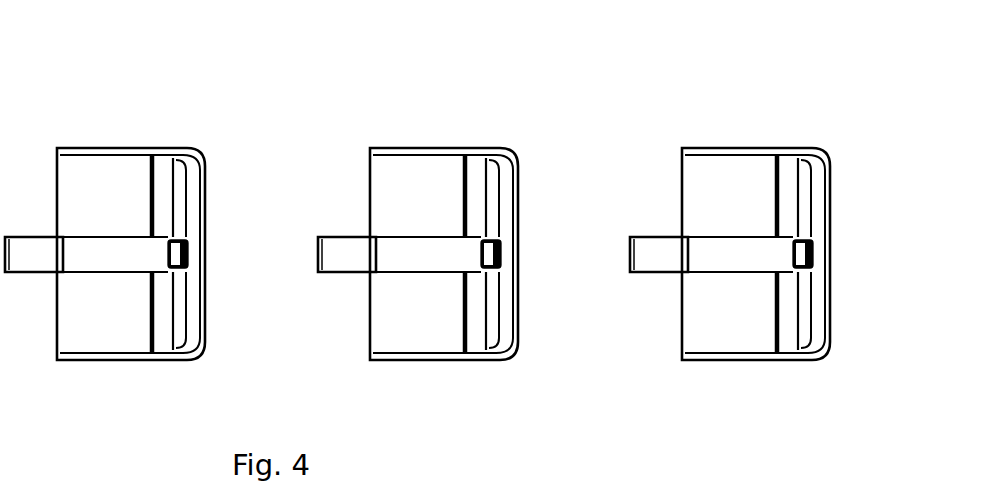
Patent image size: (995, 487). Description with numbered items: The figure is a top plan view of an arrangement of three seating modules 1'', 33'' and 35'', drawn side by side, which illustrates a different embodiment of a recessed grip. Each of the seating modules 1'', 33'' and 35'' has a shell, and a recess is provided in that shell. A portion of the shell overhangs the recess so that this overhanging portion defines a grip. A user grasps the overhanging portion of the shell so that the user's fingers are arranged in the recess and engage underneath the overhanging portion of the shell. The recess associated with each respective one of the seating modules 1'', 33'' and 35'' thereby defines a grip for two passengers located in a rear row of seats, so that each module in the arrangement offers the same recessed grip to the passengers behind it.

The seating module 1'' is at (164, 209).
The seating module 33'' is at (479, 216).
The seating module 35'' is at (779, 200).